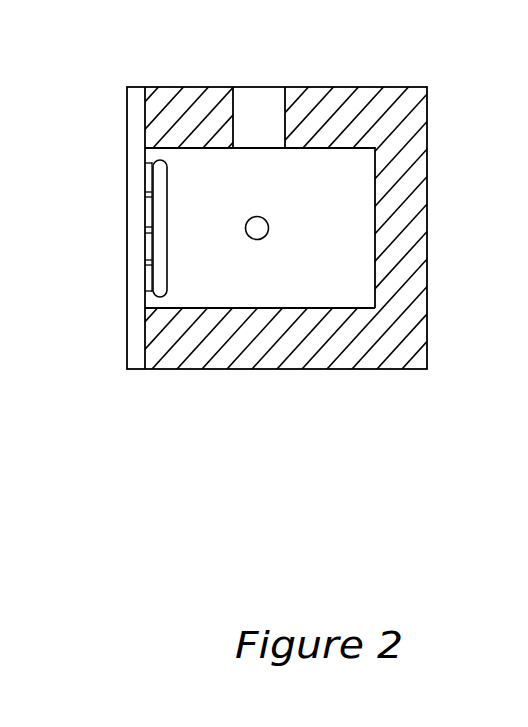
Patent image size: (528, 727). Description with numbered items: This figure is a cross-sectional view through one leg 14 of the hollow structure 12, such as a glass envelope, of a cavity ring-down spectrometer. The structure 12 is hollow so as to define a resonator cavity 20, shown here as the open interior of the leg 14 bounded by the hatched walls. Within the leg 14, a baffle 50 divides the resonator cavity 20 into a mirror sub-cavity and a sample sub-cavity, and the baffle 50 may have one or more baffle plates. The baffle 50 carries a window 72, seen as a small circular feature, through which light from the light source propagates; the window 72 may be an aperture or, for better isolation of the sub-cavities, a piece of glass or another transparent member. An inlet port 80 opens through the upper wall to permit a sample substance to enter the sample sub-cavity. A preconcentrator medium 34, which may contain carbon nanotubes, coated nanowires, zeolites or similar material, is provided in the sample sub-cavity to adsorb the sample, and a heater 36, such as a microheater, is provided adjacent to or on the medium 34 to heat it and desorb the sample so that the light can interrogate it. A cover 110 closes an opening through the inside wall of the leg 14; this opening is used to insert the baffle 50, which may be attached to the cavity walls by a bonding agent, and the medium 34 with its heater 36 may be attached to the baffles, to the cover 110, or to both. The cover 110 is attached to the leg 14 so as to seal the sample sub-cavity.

The structure 12 is at (415, 194).
The leg 14 is at (415, 342).
The resonator cavity 20 is at (360, 278).
The preconcentrator medium 34 is at (158, 250).
The heater 36 is at (148, 192).
The baffle 50 is at (193, 282).
The window 72 is at (258, 228).
The inlet port 80 is at (258, 100).
The cover 110 is at (135, 148).